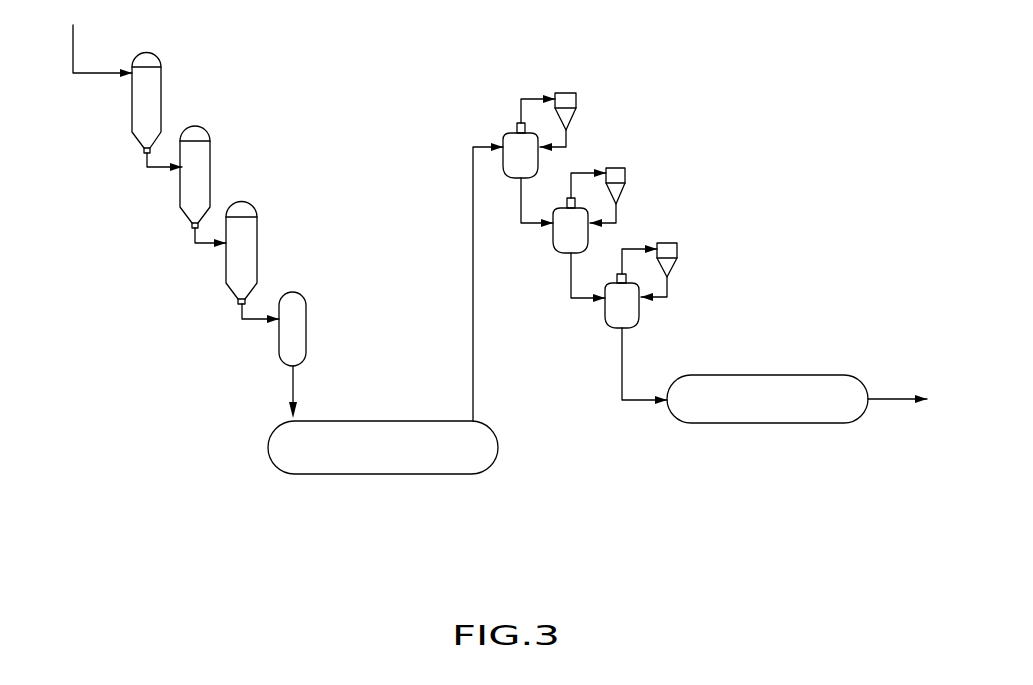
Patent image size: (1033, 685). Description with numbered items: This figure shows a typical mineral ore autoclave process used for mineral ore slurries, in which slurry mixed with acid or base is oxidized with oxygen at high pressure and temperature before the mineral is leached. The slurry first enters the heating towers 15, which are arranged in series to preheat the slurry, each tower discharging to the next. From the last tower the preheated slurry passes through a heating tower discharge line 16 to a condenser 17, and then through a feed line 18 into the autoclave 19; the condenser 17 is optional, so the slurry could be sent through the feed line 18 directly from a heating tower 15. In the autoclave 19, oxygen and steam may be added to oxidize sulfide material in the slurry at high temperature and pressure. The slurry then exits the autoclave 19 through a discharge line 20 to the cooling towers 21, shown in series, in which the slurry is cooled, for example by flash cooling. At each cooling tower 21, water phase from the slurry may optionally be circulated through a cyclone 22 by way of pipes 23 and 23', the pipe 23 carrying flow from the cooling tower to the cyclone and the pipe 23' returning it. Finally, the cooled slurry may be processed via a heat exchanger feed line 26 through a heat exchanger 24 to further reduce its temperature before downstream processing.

The heating tower 15 is at (132, 103).
The heating tower discharge line 16 is at (241, 307).
The condenser 17 is at (279, 342).
The feed line 18 is at (293, 383).
The autoclave 19 is at (502, 478).
The discharge line 20 is at (473, 245).
The cooling tower 21 is at (538, 158).
The cyclone 22 is at (566, 93).
The pipe 23 is at (551, 197).
The pipe 23' is at (643, 192).
The heat exchanger 24 is at (743, 424).
The heat exchanger feed line 26 is at (622, 375).